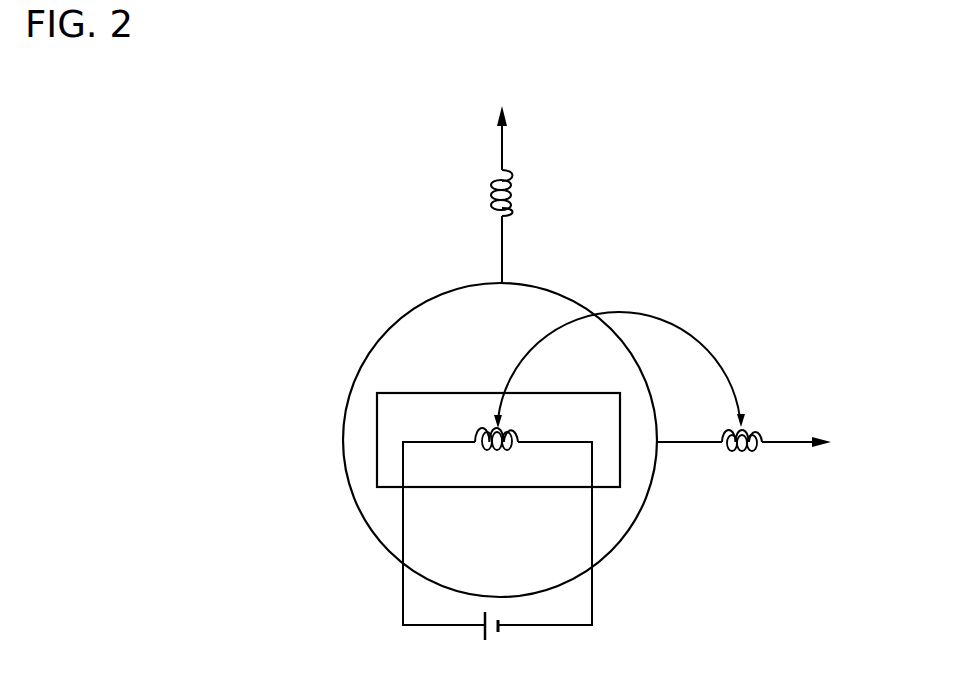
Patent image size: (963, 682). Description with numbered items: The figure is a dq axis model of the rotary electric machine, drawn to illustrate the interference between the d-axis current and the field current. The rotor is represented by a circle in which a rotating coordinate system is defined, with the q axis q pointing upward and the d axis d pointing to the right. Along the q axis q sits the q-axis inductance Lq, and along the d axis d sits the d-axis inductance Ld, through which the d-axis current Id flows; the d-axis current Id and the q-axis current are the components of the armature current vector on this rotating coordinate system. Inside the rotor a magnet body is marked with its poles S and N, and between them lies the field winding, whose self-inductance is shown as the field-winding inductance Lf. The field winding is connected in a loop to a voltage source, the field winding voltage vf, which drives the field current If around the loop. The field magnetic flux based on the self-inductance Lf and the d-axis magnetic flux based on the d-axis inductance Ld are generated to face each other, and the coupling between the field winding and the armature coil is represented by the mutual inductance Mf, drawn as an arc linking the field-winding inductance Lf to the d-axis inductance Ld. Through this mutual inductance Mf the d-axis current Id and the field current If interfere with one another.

The q axis q is at (543, 194).
The d axis d is at (766, 427).
The q-axis inductance Lq is at (517, 193).
The d-axis inductance Ld is at (742, 455).
The field-winding inductance Lf is at (497, 526).
The mutual inductance Mf is at (619, 359).
The field winding voltage vf is at (472, 634).
The field current If is at (423, 508).
The d-axis current Id is at (790, 503).
The permanent magnet south pole S is at (498, 440).
The permanent magnet north pole N is at (601, 417).